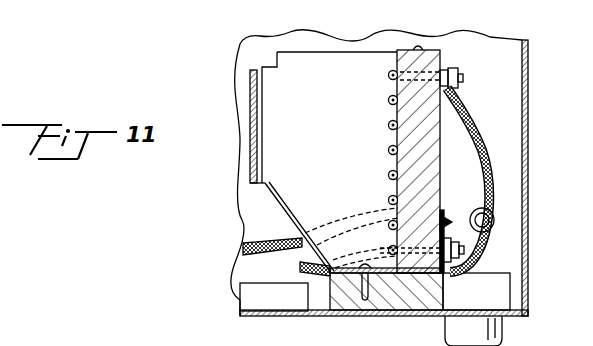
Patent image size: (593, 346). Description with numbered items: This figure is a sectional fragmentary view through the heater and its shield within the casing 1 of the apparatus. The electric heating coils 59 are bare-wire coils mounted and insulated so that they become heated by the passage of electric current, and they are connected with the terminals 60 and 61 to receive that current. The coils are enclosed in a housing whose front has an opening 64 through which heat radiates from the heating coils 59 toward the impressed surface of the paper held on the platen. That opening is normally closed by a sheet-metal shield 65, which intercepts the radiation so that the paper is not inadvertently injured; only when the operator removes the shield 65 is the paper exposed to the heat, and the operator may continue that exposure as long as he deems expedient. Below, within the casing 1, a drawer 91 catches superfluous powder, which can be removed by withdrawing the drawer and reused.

The casing 1 is at (527, 152).
The electric heating coils 59 is at (391, 128).
The terminal 60 is at (462, 78).
The terminal 61 is at (333, 75).
The opening 64 is at (257, 70).
The shield 65 is at (252, 107).
The drawer 91 is at (280, 266).